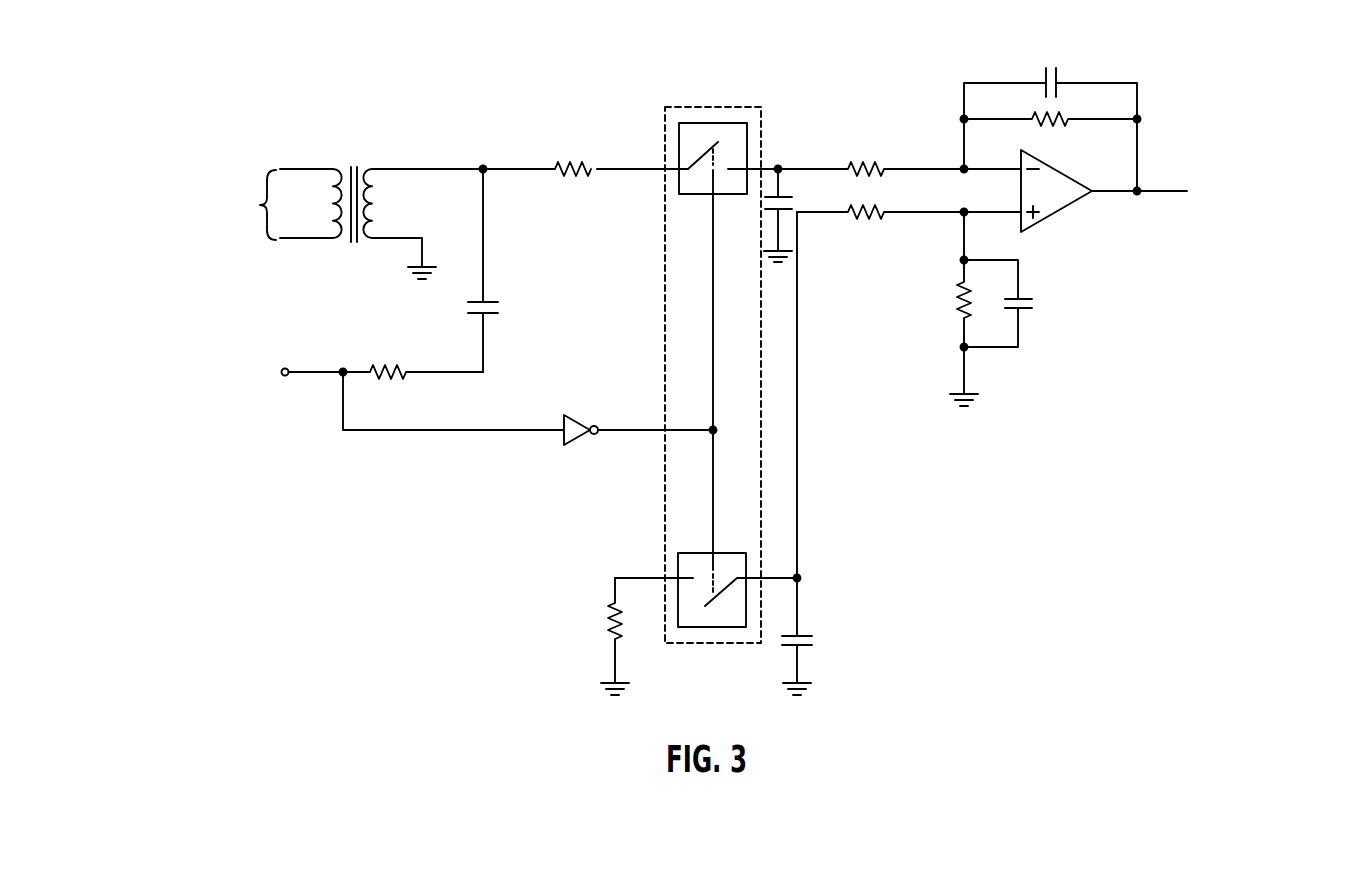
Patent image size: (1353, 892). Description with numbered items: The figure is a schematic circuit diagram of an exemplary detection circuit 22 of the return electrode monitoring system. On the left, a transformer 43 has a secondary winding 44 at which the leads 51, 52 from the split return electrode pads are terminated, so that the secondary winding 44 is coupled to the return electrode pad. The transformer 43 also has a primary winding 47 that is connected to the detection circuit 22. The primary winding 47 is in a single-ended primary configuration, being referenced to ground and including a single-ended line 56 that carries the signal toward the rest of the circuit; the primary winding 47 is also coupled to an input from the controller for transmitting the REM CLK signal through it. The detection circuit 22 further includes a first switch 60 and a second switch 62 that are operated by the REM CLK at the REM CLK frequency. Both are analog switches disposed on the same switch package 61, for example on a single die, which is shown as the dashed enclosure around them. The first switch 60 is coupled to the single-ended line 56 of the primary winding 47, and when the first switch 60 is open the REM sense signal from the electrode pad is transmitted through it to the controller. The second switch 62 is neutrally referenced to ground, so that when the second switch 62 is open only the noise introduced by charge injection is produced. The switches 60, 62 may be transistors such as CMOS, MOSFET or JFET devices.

The detection circuit 22 is at (540, 62).
The transformer 43 is at (349, 159).
The secondary winding 44 is at (324, 263).
The primary winding 47 is at (375, 160).
The lead 51 is at (292, 169).
The lead 52 is at (292, 240).
The single-ended line 56 is at (528, 166).
The first switch 60 is at (698, 122).
The switch package 61 is at (738, 106).
The second switch 62 is at (698, 552).